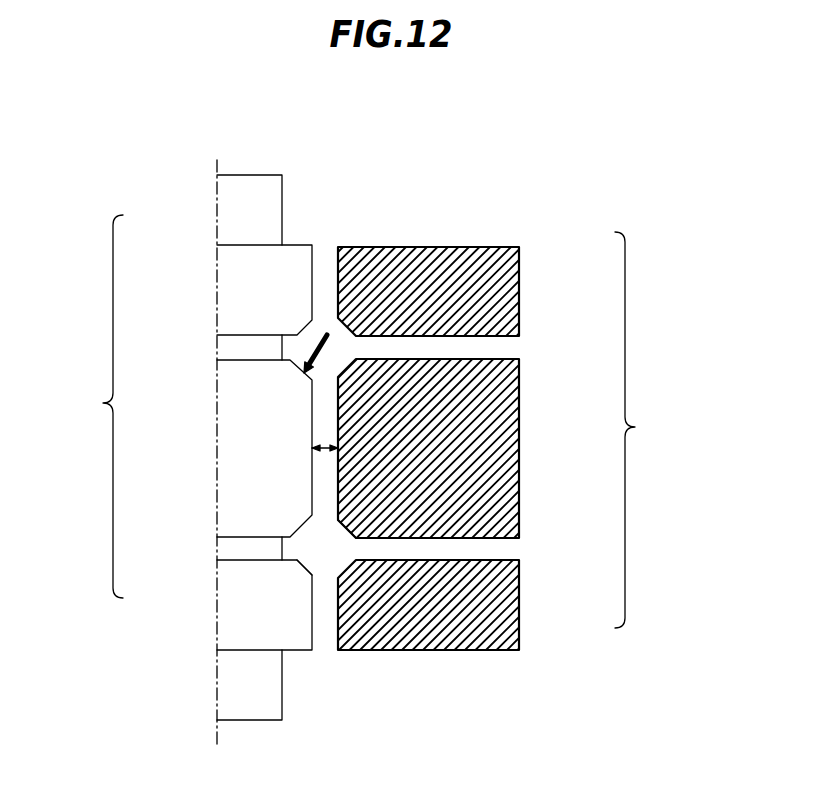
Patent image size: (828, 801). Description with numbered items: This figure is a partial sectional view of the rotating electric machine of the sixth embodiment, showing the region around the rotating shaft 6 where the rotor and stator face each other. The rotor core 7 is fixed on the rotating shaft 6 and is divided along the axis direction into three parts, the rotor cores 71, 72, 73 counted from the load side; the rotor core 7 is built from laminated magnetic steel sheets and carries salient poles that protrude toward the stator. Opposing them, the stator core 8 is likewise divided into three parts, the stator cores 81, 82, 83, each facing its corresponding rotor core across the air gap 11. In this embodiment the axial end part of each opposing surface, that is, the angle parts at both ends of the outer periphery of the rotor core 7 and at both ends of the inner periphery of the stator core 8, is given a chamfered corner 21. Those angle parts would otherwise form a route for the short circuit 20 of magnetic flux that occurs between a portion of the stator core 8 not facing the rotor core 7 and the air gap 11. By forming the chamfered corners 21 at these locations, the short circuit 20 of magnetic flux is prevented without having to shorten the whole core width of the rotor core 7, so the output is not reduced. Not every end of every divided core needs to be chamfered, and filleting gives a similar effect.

The rotating shaft 6 is at (238, 186).
The rotor core 7 is at (70, 415).
The rotor core 71 is at (222, 284).
The rotor core 72 is at (222, 450).
The rotor core 73 is at (222, 611).
The stator core 8 is at (647, 435).
The stator core 81 is at (519, 278).
The stator core 82 is at (519, 438).
The stator core 83 is at (519, 608).
The short circuit of magnetic flux 20 is at (318, 333).
The air gap 11 is at (325, 452).
The chamfered corner 21 is at (302, 565).